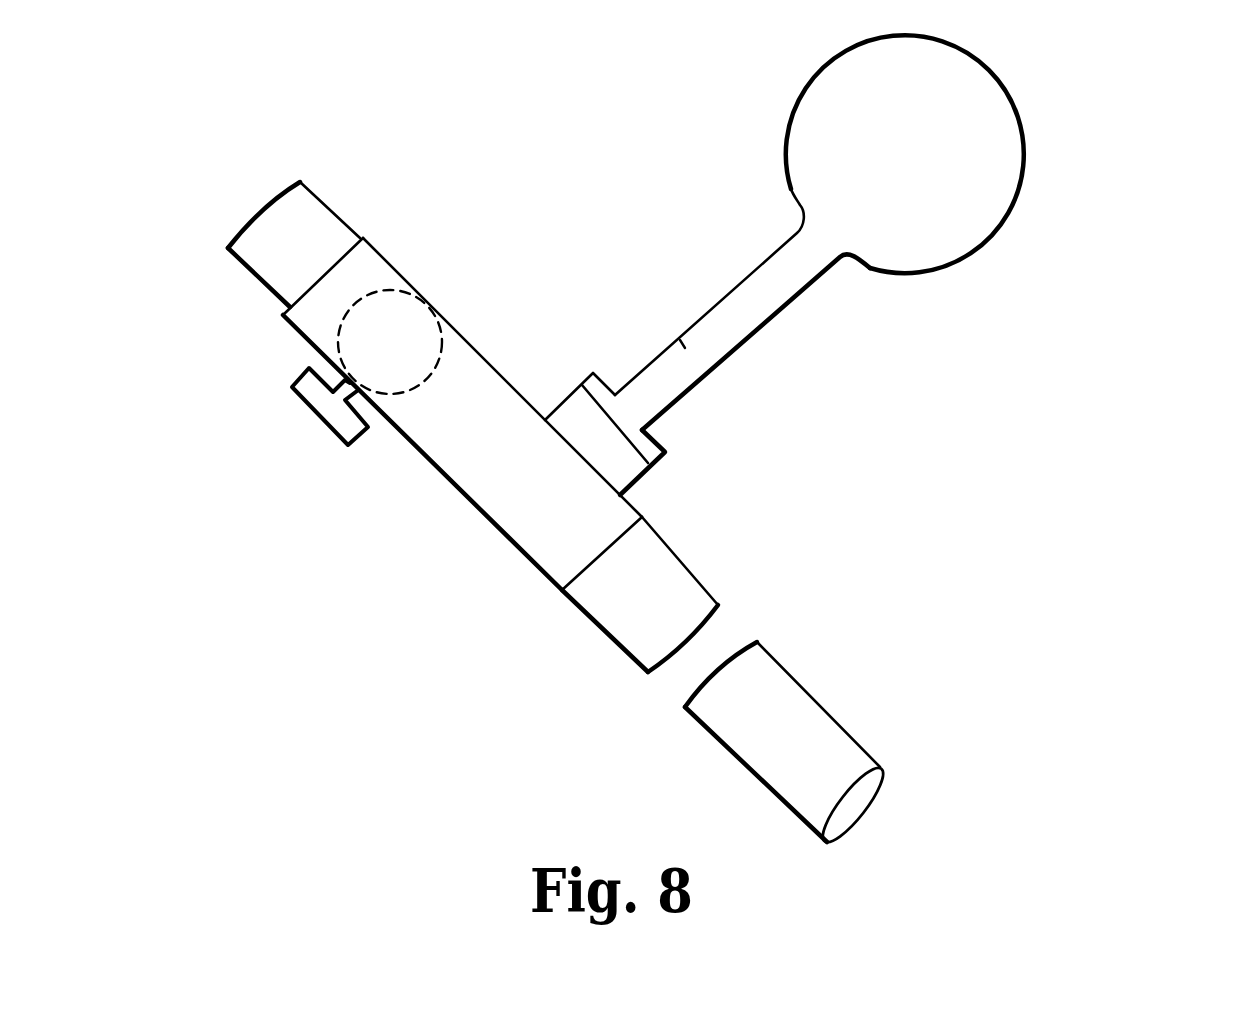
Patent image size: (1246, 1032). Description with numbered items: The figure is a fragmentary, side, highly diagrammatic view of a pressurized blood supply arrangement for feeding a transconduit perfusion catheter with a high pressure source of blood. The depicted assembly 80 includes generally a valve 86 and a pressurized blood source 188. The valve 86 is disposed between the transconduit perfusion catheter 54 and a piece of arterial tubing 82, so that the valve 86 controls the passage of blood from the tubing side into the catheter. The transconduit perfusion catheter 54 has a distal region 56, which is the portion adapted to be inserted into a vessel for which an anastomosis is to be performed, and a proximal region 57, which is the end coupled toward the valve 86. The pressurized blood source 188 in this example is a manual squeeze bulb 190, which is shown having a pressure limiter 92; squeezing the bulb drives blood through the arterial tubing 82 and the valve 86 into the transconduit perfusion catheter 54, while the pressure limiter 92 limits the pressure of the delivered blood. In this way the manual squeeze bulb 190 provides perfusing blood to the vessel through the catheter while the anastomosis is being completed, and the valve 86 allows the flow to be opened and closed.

The transconduit perfusion catheter 54 is at (792, 673).
The distal region 56 is at (893, 757).
The proximal region 57 is at (668, 552).
The assembly 80 is at (360, 500).
The arterial tubing 82 is at (248, 268).
The valve 86 is at (305, 400).
The pressure limiter 92 is at (697, 362).
The pressurized blood source 188 is at (1120, 272).
The manual squeeze bulb 190 is at (933, 267).